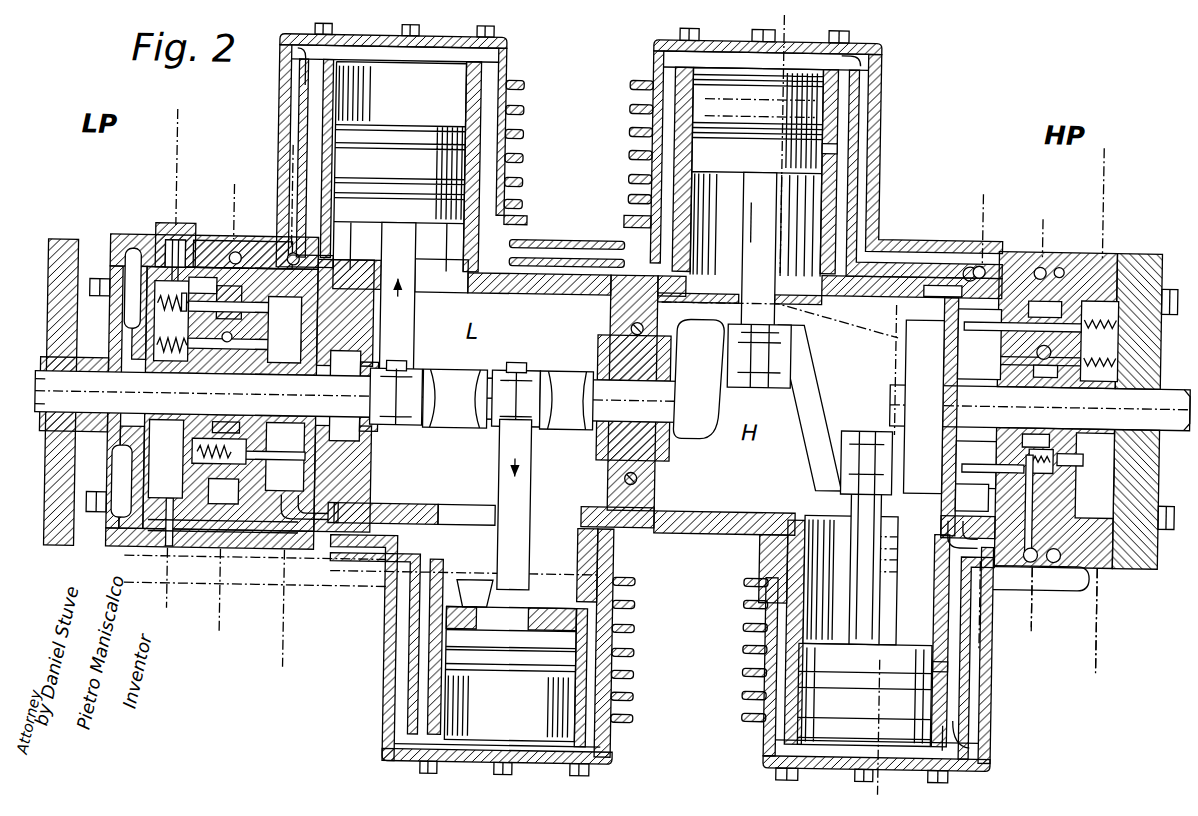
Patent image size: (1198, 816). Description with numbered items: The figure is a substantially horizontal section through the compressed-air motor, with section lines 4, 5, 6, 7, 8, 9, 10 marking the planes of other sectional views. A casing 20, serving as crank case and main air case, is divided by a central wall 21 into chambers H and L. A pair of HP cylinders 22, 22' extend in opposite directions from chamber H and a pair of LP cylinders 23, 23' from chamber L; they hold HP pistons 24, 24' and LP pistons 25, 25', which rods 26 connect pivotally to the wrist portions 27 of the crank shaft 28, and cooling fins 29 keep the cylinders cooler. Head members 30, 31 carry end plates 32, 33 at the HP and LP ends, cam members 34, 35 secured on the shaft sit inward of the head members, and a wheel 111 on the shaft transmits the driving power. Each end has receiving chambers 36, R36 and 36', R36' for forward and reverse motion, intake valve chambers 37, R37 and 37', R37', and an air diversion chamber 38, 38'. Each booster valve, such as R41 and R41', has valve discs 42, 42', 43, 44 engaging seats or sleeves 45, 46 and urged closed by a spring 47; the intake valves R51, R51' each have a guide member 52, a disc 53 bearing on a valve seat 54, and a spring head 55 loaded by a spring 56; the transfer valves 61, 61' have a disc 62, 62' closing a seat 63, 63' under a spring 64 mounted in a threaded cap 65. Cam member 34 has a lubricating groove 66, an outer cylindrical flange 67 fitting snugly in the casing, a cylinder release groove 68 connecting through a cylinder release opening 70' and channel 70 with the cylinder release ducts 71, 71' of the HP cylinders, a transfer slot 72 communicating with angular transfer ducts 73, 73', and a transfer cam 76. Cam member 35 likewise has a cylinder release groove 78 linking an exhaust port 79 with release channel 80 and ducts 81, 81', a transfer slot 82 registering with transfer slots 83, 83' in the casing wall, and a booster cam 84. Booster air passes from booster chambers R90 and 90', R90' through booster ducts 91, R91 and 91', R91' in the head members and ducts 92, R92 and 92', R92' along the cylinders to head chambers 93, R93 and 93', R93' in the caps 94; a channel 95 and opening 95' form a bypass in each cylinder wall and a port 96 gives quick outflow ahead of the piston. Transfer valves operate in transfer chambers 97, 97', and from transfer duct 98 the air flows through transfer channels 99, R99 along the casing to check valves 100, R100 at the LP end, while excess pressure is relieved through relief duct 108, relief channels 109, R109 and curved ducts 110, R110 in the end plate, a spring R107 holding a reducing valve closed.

The section line 4- 4 is at (1104, 142).
The section line 5- 5 is at (1062, 212).
The section line 6- 6 is at (1005, 190).
The section line 7- 7 is at (286, 153).
The section line 8- 8 is at (220, 193).
The section line 9- 9 is at (190, 124).
The section line 10- 10 is at (764, 15).
The casing 20 is at (950, 248).
The central wall 21 is at (610, 330).
The HP cylinder 22 is at (902, 648).
The HP cylinder 22' is at (828, 165).
The LP cylinder 23 is at (544, 642).
The LP cylinder 23' is at (513, 161).
The HP piston 24 is at (864, 675).
The HP piston 24' is at (756, 172).
The LP piston 25 is at (510, 660).
The LP piston 25' is at (399, 167).
The rod 26 is at (738, 238).
The wrist portion 27 is at (806, 372).
The crank shaft 28 is at (613, 401).
The cooling fins 29 is at (512, 201).
The head member 30 is at (1080, 248).
The head member 31 is at (216, 248).
The end plate 32 is at (1130, 250).
The end plate 33 is at (128, 248).
The cam member 34 is at (945, 355).
The cam member 35 is at (354, 397).
The receiving chamber 36 is at (1094, 476).
The receiving chamber 36' is at (165, 459).
The intake valve chamber 37 is at (1035, 440).
The intake valve chamber 37' is at (225, 427).
The air diversion chamber 38 is at (972, 498).
The air diversion chamber 38' is at (285, 329).
The valve element 42 is at (1078, 395).
The bearing ring 42' is at (173, 383).
The valve element 43 is at (633, 389).
The valve element 44 is at (631, 388).
The valve seat 45 is at (1056, 412).
The valve seat 46 is at (1010, 413).
The spring 47 is at (1110, 394).
The guide member 52 is at (1023, 310).
The valve element 53 is at (245, 325).
The valve seat 54 is at (979, 344).
The spring head 55 is at (647, 316).
The spring 56 is at (1112, 340).
The transfer valve 61 is at (993, 458).
The transfer valve 61' is at (274, 448).
The valve element 62 is at (1041, 461).
The valve spring 62' is at (219, 449).
The valve seat 63 is at (1010, 445).
The valve chamber 63' is at (284, 456).
The spring 64 is at (1034, 505).
The cap 65 is at (1075, 453).
The lubricating groove 66 is at (960, 230).
The outer cylindrical flange 67 is at (992, 270).
The cylinder release groove 68 is at (942, 301).
The cylinder release channel 70 is at (971, 535).
The cylinder release opening 70' is at (305, 512).
The cylinder release duct 71 is at (979, 737).
The cylinder release duct 71' is at (878, 55).
The transfer slot 72 is at (950, 508).
The transfer duct 73 is at (925, 522).
The transfer duct 73' is at (902, 307).
The transfer cam 76 is at (976, 465).
The cylinder release groove 78 is at (290, 477).
The exhaust port 79 is at (971, 268).
The cylinder release channel 80 is at (300, 259).
The cylinder release duct 81 is at (369, 739).
The cylinder release duct 81' is at (291, 155).
The transfer slot 82 is at (349, 299).
The transfer slot 83 is at (352, 506).
The transfer slot 83' is at (357, 275).
The booster cam 84 is at (344, 395).
The booster chamber 90' is at (223, 491).
The booster duct 91 is at (1019, 550).
The booster duct 91' is at (252, 531).
The booster duct 92 is at (1005, 698).
The booster duct 92' is at (374, 648).
The head chamber 93 is at (747, 740).
The head chamber 93' is at (634, 740).
The cap 94 is at (501, 41).
The channel 95 is at (636, 401).
The opening 95' is at (723, 405).
The port 96 is at (835, 145).
The transfer chamber 97 is at (1039, 507).
The transfer chamber 97' is at (221, 471).
The transfer duct 98 is at (1035, 540).
The transfer channel 99 is at (678, 500).
The check valve 100 is at (164, 487).
The relief duct 108 is at (1062, 546).
The relief channel 109 is at (1078, 583).
The curved duct 110 is at (127, 481).
The wheel 111 is at (62, 255).
The receiving chamber R36 is at (1099, 341).
The receiving chamber R36' is at (171, 321).
The intake valve chamber R37 is at (1044, 309).
The intake valve chamber R37' is at (229, 302).
The booster valve R41 is at (935, 348).
The booster valve R41' is at (340, 339).
The intake valve R51 is at (935, 330).
The intake valve R51' is at (340, 317).
The booster chamber R90 is at (1045, 371).
The booster chamber R90' is at (210, 382).
The booster duct R91 is at (1027, 274).
The booster duct R91' is at (250, 260).
The booster duct R92 is at (875, 173).
The booster duct R92' is at (284, 158).
The head chamber R93 is at (798, 391).
The head chamber R93' is at (446, 392).
The transfer channel R99 is at (580, 292).
The check valve R100 is at (170, 298).
The hole R107 is at (1063, 266).
The relief channel R109 is at (575, 243).
The curved duct R110 is at (133, 388).